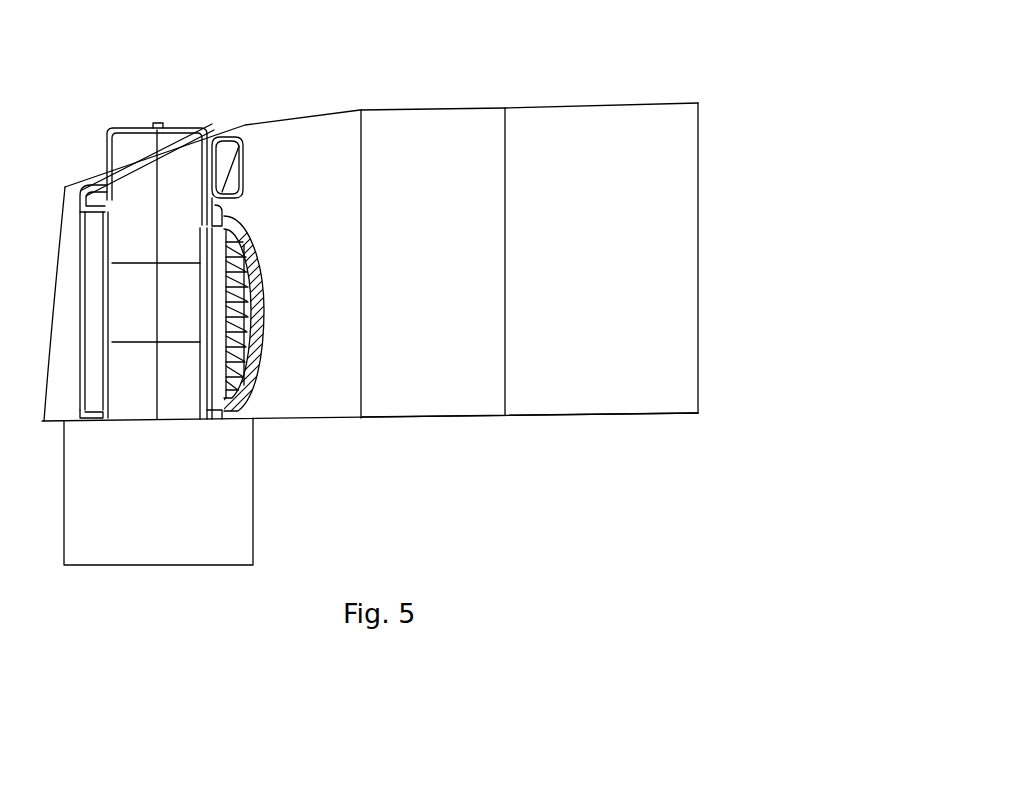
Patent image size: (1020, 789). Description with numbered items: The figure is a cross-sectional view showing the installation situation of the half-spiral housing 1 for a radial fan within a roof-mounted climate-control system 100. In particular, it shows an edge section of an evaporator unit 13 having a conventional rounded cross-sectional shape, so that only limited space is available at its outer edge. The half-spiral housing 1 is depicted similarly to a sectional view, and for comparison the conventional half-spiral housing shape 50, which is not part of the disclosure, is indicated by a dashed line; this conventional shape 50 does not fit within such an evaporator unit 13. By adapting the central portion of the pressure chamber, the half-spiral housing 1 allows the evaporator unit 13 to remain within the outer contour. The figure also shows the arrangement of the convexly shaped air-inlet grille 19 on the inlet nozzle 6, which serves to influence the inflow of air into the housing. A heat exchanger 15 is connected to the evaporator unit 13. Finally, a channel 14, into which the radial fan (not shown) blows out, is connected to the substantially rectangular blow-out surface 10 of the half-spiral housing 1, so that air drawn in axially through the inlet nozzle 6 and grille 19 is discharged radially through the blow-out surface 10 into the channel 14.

The half-spiral housing 1 is at (257, 151).
The inlet nozzle 6 is at (215, 393).
The blow-out surface 10 is at (141, 426).
The evaporator unit 13 is at (336, 356).
The channel 14 is at (103, 508).
The heat exchanger 15 is at (549, 190).
The air-inlet grille 19 is at (247, 402).
The conventional half-spiral housing shape 50 is at (189, 128).
The roof-mounted climate-control system 100 is at (492, 446).